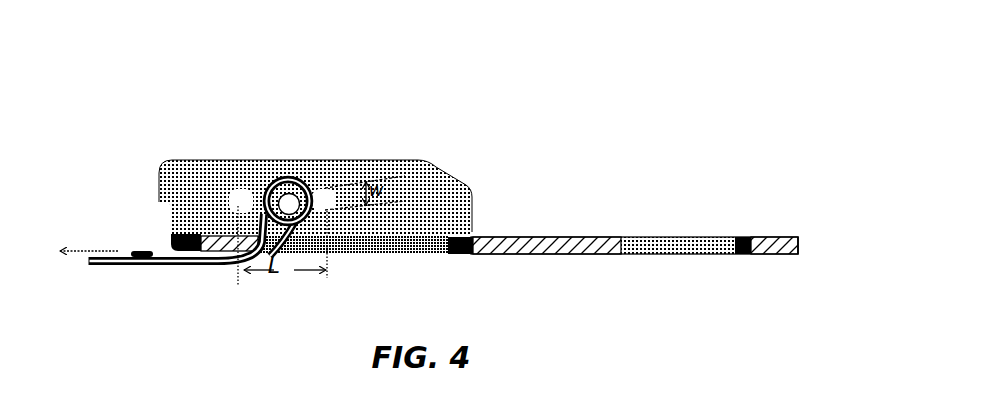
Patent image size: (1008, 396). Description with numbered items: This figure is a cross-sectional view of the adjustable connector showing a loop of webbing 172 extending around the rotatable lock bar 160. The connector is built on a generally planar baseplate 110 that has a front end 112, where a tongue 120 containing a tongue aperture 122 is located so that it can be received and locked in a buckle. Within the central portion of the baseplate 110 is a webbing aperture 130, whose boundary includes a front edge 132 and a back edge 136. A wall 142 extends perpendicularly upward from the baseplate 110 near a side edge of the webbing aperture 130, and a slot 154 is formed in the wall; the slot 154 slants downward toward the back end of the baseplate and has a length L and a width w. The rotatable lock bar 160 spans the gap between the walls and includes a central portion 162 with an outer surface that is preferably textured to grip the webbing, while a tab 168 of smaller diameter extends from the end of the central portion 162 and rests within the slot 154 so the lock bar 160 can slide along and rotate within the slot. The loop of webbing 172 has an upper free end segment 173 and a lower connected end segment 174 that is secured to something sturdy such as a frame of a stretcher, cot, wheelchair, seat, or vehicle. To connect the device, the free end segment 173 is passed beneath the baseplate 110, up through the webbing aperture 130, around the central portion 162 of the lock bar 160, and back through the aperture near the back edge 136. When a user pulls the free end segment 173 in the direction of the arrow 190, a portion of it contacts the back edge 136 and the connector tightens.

The baseplate 110 is at (458, 228).
The front end 112 is at (790, 238).
The tongue 120 is at (767, 228).
The tongue aperture 122 is at (677, 253).
The webbing aperture 130 is at (359, 262).
The front edge 132 is at (465, 228).
The back edge 136 is at (253, 230).
The wall 142 is at (372, 154).
The slot 154 is at (312, 178).
The rotatable lock bar 160 is at (282, 120).
The central portion 162 is at (275, 168).
The tab 168 is at (280, 186).
The loop of webbing 172 is at (304, 148).
The free end segment 173 is at (139, 241).
The connected end segment 174 is at (93, 262).
The arrow 190 is at (84, 244).